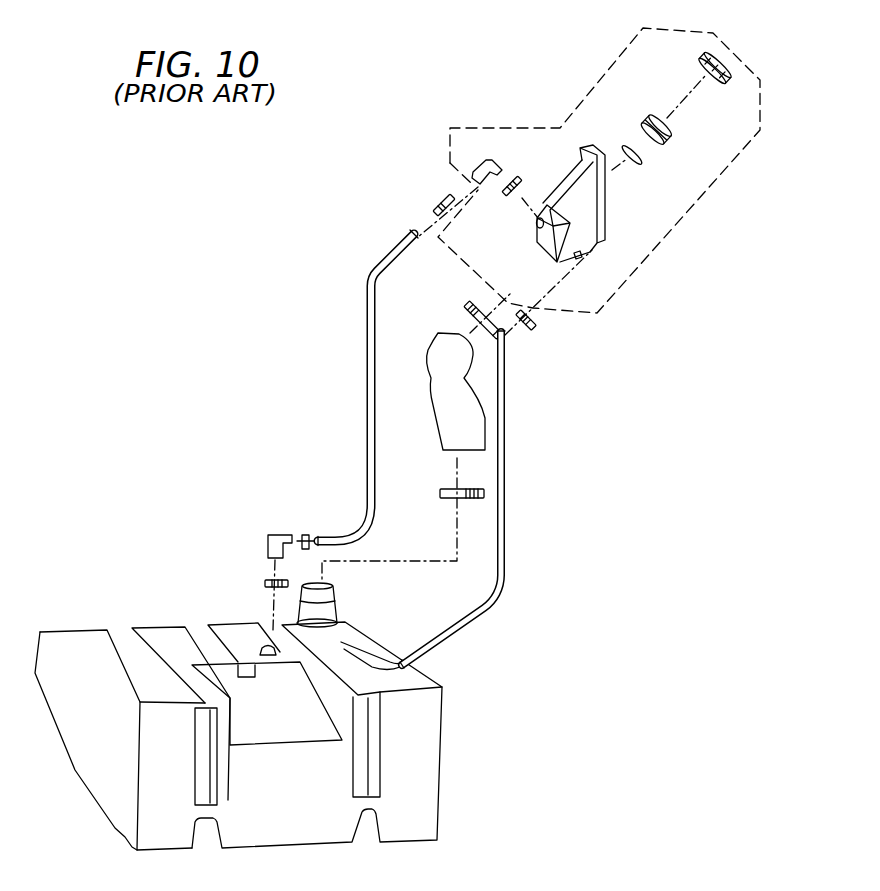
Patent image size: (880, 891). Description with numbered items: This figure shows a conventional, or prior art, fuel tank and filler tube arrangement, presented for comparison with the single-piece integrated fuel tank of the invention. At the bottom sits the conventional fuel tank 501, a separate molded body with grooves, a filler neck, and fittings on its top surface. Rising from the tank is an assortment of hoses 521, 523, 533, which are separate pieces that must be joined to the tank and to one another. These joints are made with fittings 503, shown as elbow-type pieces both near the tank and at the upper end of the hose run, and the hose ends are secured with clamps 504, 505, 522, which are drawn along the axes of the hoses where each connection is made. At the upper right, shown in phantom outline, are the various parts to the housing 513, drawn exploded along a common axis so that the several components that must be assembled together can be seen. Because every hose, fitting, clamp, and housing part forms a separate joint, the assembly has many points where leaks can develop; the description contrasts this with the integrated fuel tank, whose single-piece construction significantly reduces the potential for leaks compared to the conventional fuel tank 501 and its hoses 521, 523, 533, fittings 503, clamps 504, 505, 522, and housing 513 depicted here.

The conventional fuel tank 501 is at (73, 630).
The fittings 503 is at (484, 158).
The clamps 504 is at (515, 178).
The clamps 505 is at (434, 200).
The housing 513 is at (677, 232).
The hoses 521 is at (425, 358).
The clamps 522 is at (470, 303).
The hoses 523 is at (507, 423).
The hoses 533 is at (365, 300).